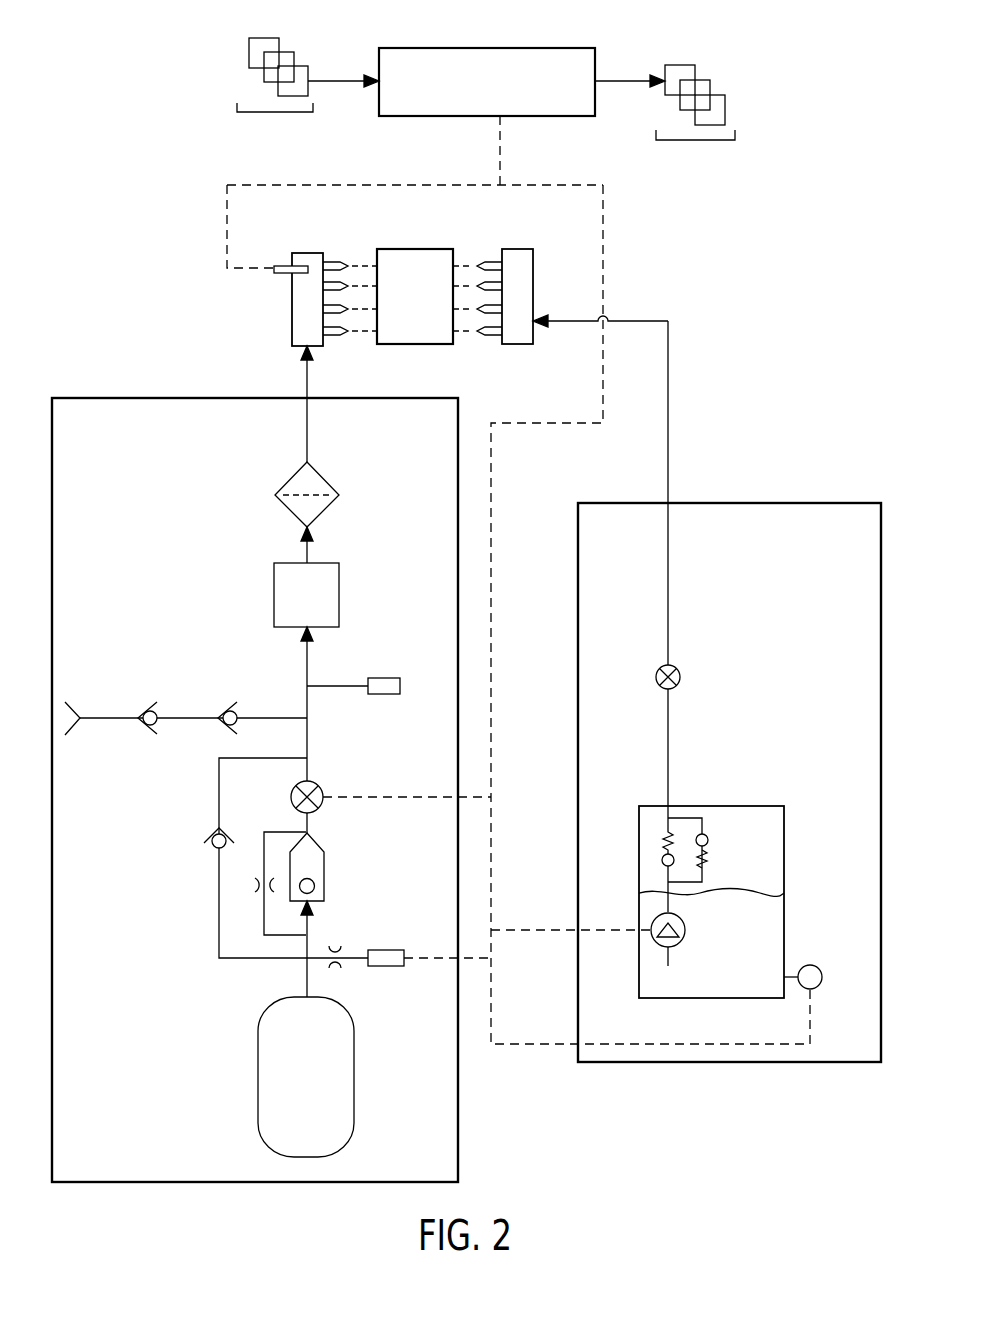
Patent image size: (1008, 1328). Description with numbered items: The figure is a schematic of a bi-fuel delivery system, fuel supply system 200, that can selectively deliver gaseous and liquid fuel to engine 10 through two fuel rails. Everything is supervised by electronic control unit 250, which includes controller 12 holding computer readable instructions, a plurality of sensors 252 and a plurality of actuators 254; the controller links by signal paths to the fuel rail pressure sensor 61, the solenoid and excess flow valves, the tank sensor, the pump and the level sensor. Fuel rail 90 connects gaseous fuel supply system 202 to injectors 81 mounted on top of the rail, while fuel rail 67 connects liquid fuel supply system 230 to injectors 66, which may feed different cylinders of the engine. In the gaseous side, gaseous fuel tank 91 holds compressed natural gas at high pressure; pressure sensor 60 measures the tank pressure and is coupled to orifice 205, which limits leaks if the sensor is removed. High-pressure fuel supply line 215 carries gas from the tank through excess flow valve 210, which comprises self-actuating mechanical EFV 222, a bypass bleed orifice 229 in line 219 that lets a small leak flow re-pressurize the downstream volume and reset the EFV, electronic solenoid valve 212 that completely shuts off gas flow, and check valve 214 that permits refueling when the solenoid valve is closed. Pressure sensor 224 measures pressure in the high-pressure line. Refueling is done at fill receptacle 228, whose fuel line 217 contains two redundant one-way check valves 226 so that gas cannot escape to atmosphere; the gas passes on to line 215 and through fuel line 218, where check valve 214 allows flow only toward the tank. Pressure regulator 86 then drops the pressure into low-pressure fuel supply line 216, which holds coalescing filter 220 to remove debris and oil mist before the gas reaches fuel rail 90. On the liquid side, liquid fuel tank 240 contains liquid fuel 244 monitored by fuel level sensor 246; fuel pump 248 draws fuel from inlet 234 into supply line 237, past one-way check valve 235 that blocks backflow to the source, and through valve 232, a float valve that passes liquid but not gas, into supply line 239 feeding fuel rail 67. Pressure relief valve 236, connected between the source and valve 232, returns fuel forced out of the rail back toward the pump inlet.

The fuel supply system 200 is at (126, 68).
The electronic control unit 250 is at (660, 26).
The controller 12 is at (570, 48).
The sensors 252 is at (305, 101).
The actuators 254 is at (679, 127).
The engine 10 is at (428, 249).
The fuel rail 90 is at (292, 312).
The pressure sensor 61 is at (283, 264).
The injectors 81 is at (333, 255).
The injectors 66 is at (480, 262).
The fuel rail 67 is at (533, 293).
The gaseous fuel supply system 202 is at (122, 380).
The fuel supply line 216 is at (307, 428).
The coalescing filter 220 is at (328, 480).
The pressure regulator 86 is at (338, 568).
The fuel supply line 215 is at (305, 655).
The pressure sensor 224 is at (392, 678).
The fill receptacle 228 is at (78, 710).
The one-way check valves 226 is at (232, 703).
The fuel line 217 is at (123, 725).
The fuel line 218 is at (219, 772).
The electronic solenoid valve 212 is at (320, 783).
The check valve 214 is at (209, 838).
The mechanical EFV 222 is at (320, 848).
The excess flow valve 210 is at (356, 868).
The bypass bleed orifice 229 is at (252, 883).
The line 219 is at (263, 918).
The orifice 205 is at (333, 943).
The pressure sensor 60 is at (395, 950).
The gaseous fuel tank 91 is at (337, 1062).
The liquid fuel supply system 230 is at (796, 490).
The supply line 239 is at (668, 613).
The valve 232 is at (676, 667).
The pressure relief valve 236 is at (705, 833).
The check valve 235 is at (661, 846).
The supply line 237 is at (670, 892).
The liquid fuel tank 240 is at (784, 855).
The fuel pump 248 is at (656, 918).
The inlet 234 is at (668, 957).
The liquid fuel 244 is at (712, 985).
The fuel level sensor 246 is at (822, 985).